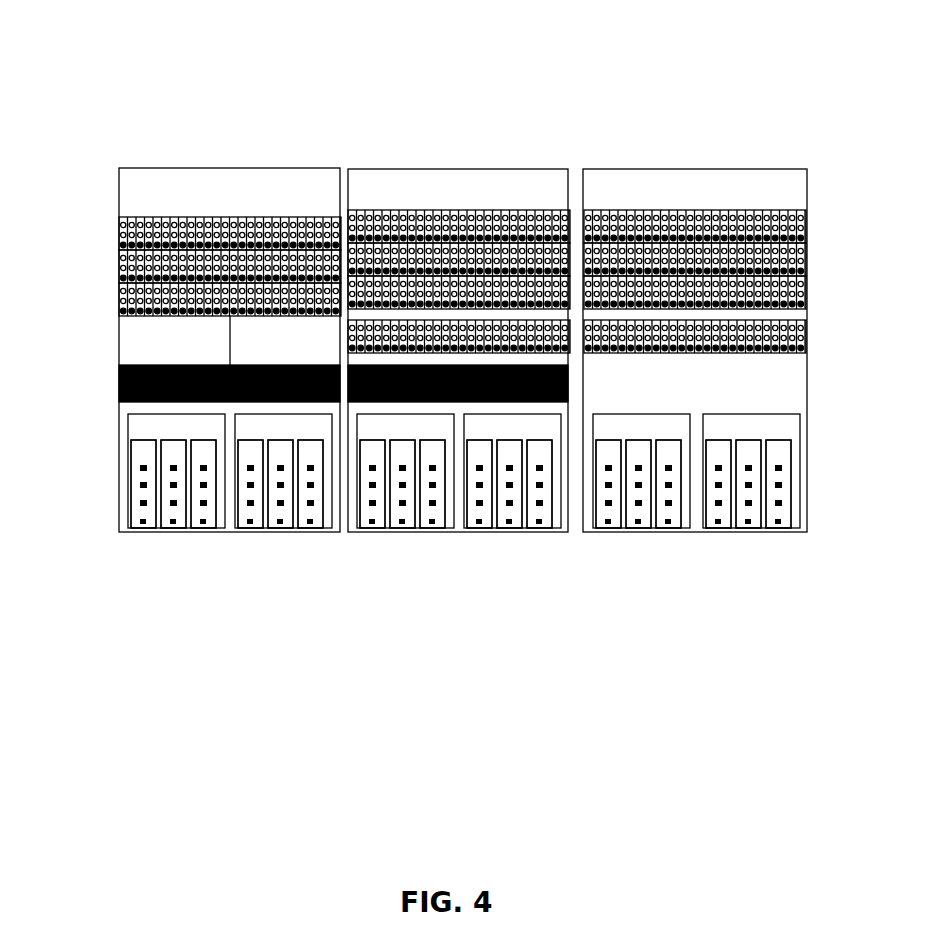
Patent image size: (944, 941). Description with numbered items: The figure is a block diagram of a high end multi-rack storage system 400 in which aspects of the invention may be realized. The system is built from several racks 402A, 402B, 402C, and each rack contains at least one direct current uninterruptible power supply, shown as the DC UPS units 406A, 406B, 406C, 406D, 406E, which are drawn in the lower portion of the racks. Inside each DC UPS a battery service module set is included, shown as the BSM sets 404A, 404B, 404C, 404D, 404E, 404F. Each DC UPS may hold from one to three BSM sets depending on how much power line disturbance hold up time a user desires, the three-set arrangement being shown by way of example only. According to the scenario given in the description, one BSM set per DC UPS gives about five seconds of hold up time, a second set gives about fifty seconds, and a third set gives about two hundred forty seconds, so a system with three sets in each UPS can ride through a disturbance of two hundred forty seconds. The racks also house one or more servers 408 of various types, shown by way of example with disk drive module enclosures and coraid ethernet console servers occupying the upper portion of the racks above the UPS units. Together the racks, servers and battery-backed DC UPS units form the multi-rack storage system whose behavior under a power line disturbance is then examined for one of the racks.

The high end multi-rack storage system 400 is at (141, 57).
The rack 402A is at (125, 167).
The rack 402B is at (462, 168).
The rack 402C is at (755, 168).
The battery service module set 404A is at (233, 532).
The battery service module set 404B is at (340, 532).
The battery service module set 404C is at (458, 532).
The battery service module set 404D is at (570, 532).
The battery service module set 404E is at (698, 532).
The battery service module set 404F is at (805, 532).
The direct current uninterruptible power supply 406A is at (143, 532).
The direct current uninterruptible power supply 406B is at (250, 532).
The direct current uninterruptible power supply 406C is at (372, 532).
The direct current uninterruptible power supply 406D is at (479, 532).
The direct current uninterruptible power supply 406E is at (608, 532).
The server 408 is at (118, 327).